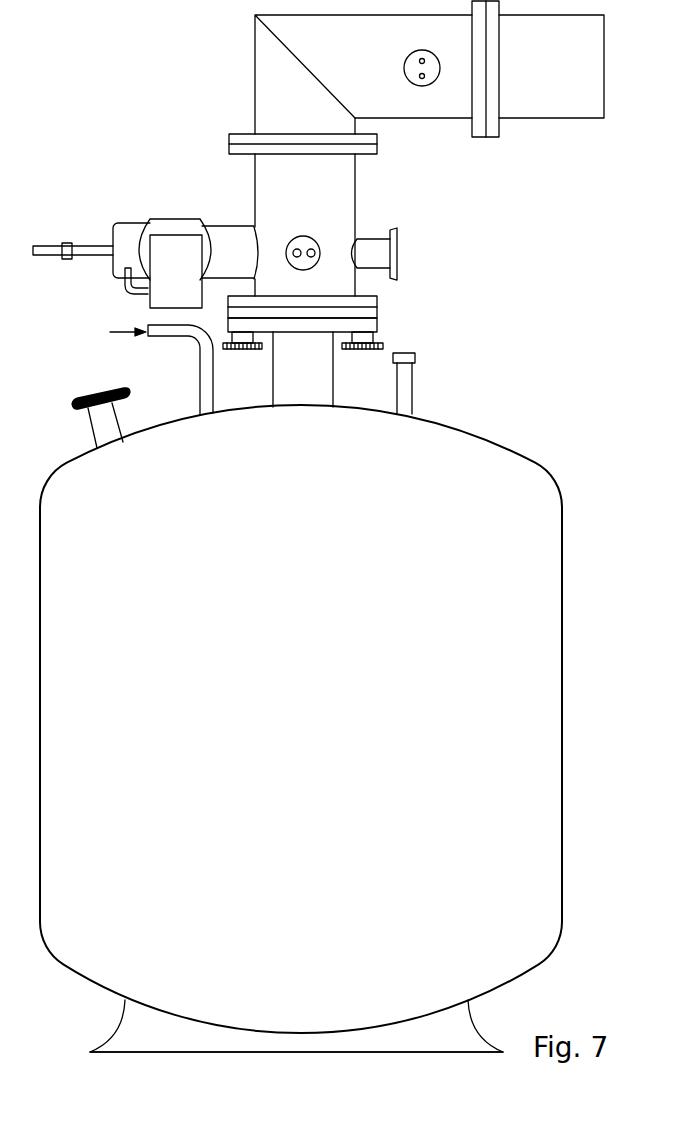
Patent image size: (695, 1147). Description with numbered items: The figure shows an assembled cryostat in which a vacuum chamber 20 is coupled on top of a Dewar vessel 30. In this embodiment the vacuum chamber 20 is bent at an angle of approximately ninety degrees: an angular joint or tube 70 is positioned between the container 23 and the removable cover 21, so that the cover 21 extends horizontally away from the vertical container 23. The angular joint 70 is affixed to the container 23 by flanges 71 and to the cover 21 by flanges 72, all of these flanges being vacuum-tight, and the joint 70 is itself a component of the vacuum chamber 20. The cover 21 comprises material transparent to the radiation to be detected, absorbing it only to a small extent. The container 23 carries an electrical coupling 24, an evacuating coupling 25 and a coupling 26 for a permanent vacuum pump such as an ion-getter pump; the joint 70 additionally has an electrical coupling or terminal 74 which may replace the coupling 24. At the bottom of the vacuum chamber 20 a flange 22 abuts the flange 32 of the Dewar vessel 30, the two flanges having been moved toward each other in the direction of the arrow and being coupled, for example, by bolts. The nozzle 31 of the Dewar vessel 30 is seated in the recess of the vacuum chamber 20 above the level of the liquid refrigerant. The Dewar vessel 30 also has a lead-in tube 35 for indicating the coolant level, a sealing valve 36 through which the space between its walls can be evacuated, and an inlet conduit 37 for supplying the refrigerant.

The vacuum chamber 20 is at (428, 88).
The removable cover 21 is at (604, 77).
The flange 22 is at (377, 310).
The container 23 is at (264, 204).
The electrical coupling 24 is at (314, 243).
The evacuating coupling 25 is at (397, 256).
The coupling for permanent vacuum pump 26 is at (177, 226).
The Dewar vessel 30 is at (550, 648).
The nozzle 31 is at (320, 382).
The flange 32 is at (377, 325).
The lead-in tube 35 is at (405, 382).
The sealing valve 36 is at (101, 392).
The inlet conduit 37 is at (200, 380).
The angular joint or tube 70 is at (262, 70).
The flanges 71 is at (377, 144).
The flanges 72 is at (486, 137).
The electrical coupling or terminal 74 is at (427, 81).